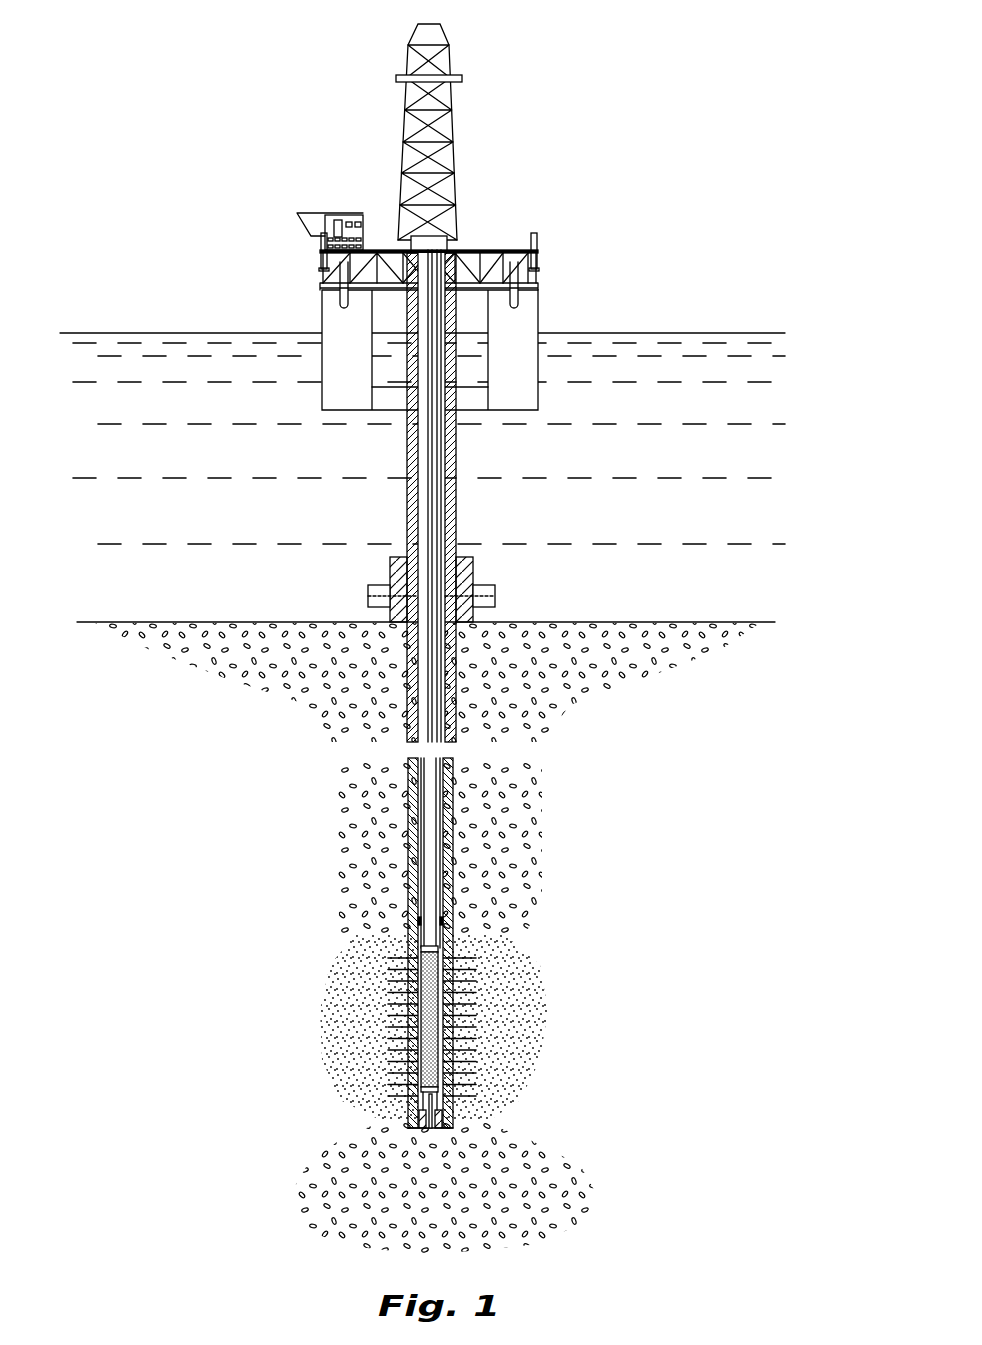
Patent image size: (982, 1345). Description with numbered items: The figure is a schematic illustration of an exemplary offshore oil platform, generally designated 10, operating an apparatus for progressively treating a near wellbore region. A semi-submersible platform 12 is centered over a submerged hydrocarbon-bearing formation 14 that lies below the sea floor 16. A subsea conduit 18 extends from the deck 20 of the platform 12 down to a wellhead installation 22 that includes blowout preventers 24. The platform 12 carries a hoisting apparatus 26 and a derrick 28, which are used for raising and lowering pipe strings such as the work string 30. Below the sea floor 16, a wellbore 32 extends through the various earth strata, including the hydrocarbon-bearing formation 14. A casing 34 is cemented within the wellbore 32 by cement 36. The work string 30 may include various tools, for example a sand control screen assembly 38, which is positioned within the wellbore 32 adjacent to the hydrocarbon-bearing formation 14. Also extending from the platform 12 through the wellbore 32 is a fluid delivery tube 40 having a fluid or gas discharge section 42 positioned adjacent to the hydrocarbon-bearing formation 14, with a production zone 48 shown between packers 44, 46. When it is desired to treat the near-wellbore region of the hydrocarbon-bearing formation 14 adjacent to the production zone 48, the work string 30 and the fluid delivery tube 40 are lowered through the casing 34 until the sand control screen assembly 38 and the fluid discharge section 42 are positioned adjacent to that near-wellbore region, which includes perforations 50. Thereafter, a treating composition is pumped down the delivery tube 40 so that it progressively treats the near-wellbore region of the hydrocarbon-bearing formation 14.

The offshore oil platform 10 is at (258, 132).
The semi-submersible platform 12 is at (536, 250).
The hydrocarbon-bearing formation 14 is at (340, 1002).
The sea floor 16 is at (651, 627).
The subsea conduit 18 is at (408, 512).
The deck 20 is at (538, 287).
The wellhead installation 22 is at (393, 571).
The blowout preventers 24 is at (493, 597).
The hoisting apparatus 26 is at (429, 236).
The derrick 28 is at (451, 63).
The work string 30 is at (436, 516).
The wellbore 32 is at (455, 815).
The casing 34 is at (415, 827).
The cement 36 is at (453, 847).
The sand control screen assembly 38 is at (420, 1031).
The fluid delivery tube 40 is at (438, 875).
The fluid discharge section 42 is at (445, 1100).
The packer 44 is at (452, 922).
The packer 46 is at (448, 1115).
The production zone 48 is at (453, 942).
The perforations 50 is at (405, 1085).